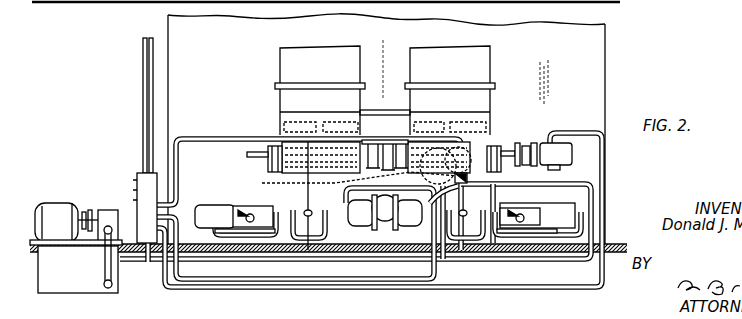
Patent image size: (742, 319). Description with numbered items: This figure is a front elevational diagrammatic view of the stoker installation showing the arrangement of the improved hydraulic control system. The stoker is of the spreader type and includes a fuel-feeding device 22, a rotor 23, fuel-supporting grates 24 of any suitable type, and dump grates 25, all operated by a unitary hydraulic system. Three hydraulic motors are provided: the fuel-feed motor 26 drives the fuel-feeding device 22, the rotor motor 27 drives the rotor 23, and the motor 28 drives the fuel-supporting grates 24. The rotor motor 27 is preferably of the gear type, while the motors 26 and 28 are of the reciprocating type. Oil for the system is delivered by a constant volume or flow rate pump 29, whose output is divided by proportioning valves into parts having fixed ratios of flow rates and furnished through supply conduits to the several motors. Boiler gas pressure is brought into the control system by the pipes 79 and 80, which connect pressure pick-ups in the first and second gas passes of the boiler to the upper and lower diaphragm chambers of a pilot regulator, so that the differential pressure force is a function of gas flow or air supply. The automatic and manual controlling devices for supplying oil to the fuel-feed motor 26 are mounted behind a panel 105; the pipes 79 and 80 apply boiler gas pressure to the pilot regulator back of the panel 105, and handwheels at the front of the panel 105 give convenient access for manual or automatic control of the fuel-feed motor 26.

The fuel-feeding device 22 is at (331, 121).
The rotor 23 is at (280, 146).
The fuel-supporting grates 24 is at (349, 182).
The dump grates 25 is at (190, 203).
The fuel-feed motor 26 is at (470, 150).
The rotor motor 27 is at (562, 165).
The grate motor 28 is at (412, 217).
The constant volume pump 29 is at (105, 210).
The pipe 79 is at (143, 40).
The pipe 80 is at (153, 40).
The panel 105 is at (139, 175).